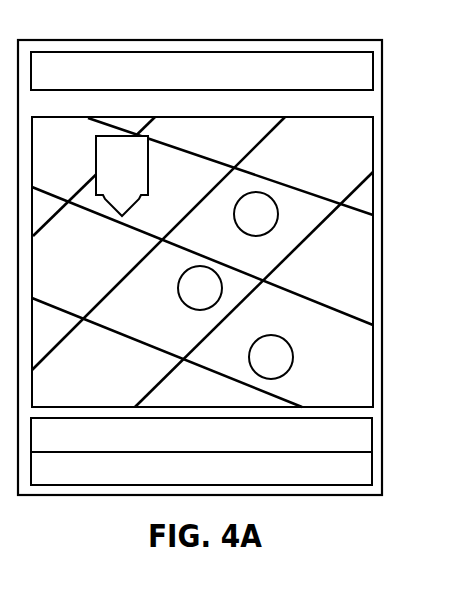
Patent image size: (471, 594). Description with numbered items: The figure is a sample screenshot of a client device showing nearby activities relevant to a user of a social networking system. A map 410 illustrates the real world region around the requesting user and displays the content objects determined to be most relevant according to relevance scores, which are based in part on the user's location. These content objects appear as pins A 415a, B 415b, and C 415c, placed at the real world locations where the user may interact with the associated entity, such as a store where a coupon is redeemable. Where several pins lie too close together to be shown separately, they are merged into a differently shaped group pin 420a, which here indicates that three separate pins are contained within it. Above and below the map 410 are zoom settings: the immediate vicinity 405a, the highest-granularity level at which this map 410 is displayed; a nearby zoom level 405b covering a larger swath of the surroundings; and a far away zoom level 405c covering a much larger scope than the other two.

The immediate vicinity zoom level 405a is at (295, 68).
The nearby zoom level 405b is at (337, 433).
The far away zoom level 405c is at (339, 478).
The map 410 is at (375, 265).
The pin A 415a is at (278, 212).
The pin B 415b is at (222, 290).
The pin C 415c is at (292, 364).
The group pin 420a is at (148, 172).